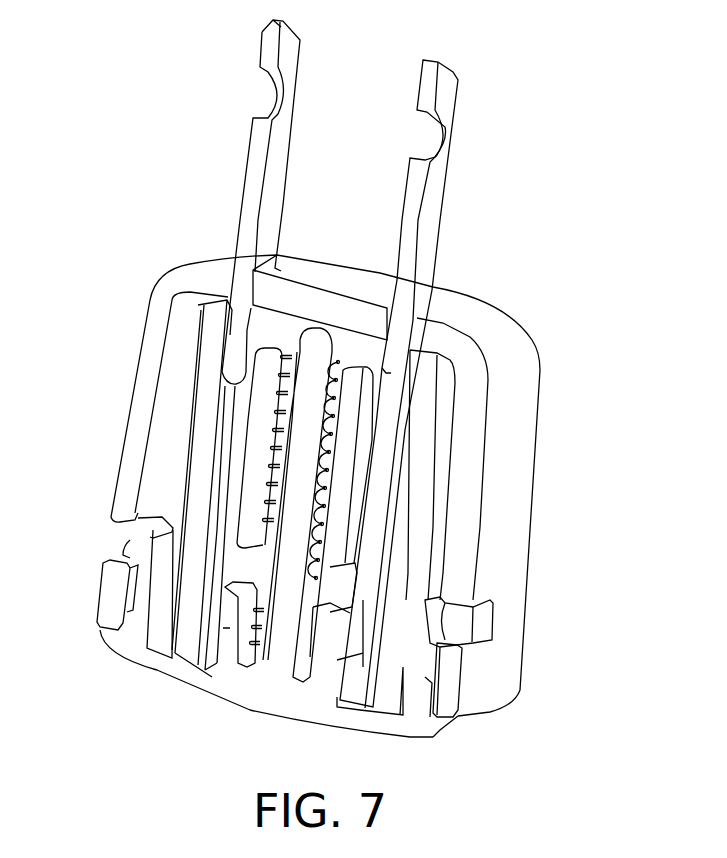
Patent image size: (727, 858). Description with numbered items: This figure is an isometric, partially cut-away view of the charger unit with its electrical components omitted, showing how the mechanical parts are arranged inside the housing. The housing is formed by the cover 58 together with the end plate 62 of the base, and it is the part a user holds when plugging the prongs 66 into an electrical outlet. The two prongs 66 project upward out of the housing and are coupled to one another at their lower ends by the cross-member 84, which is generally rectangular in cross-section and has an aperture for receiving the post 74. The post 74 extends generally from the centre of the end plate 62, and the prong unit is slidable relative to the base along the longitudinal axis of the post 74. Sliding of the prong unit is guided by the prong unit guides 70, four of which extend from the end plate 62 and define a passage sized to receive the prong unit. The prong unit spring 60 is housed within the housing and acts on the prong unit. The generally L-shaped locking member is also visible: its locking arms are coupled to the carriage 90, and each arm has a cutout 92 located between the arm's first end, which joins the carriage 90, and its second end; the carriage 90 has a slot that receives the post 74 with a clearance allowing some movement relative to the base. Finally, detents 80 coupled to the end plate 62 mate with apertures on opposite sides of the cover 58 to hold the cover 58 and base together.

The cover 58 is at (510, 428).
The prongs 66 is at (447, 93).
The cross-member 84 is at (357, 343).
The prong unit guides 70 is at (215, 338).
The post 74 is at (300, 425).
The prong unit spring 60 is at (270, 487).
The cutout 92 is at (340, 582).
The detents 80 is at (458, 623).
The end plate 62 is at (470, 718).
The carriage 90 is at (228, 644).